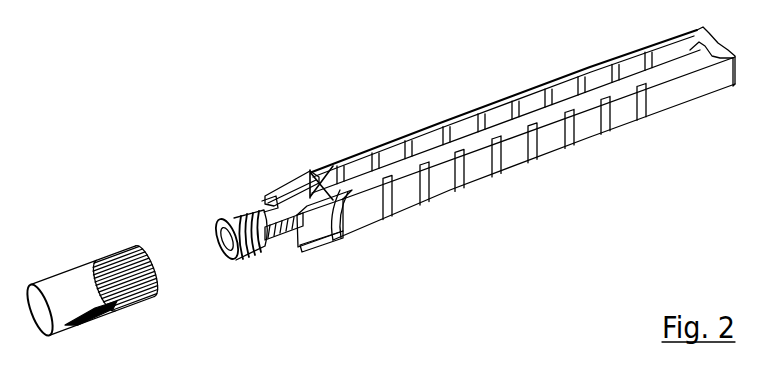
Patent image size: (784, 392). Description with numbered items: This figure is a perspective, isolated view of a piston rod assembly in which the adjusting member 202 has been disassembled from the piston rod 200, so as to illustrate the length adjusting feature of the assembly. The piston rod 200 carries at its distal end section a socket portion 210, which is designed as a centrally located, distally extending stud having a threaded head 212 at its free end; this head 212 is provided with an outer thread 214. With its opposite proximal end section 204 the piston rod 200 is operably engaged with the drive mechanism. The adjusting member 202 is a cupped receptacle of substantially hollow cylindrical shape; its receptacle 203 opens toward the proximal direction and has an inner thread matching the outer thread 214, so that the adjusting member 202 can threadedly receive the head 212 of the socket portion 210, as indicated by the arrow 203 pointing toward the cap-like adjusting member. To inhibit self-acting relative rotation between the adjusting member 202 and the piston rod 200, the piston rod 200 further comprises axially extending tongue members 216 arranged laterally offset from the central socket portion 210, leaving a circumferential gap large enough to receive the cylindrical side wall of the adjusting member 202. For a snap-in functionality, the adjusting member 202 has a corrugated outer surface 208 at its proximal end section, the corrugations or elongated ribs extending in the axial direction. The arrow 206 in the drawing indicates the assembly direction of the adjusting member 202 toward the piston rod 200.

The piston rod 200 is at (440, 120).
The adjusting member 202 is at (60, 288).
The receptacle 203 is at (165, 265).
The proximal end section 204 is at (718, 125).
The insert holder assembly 206 is at (206, 203).
The corrugated outer surface 208 is at (108, 268).
The socket portion 210 is at (290, 230).
The threaded head 212 is at (243, 257).
The outer thread 214 is at (232, 217).
The tongue members 216 is at (296, 186).